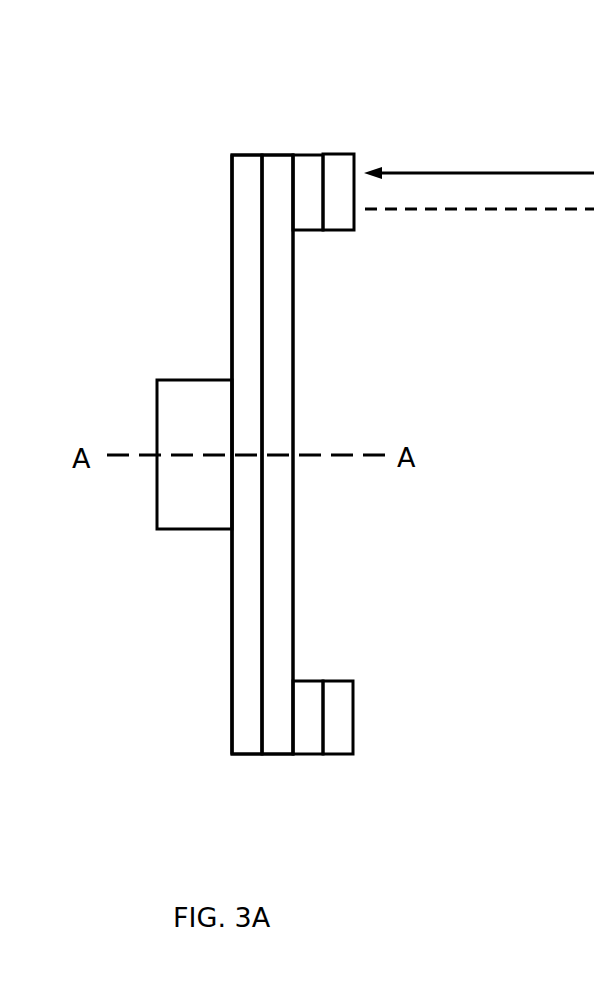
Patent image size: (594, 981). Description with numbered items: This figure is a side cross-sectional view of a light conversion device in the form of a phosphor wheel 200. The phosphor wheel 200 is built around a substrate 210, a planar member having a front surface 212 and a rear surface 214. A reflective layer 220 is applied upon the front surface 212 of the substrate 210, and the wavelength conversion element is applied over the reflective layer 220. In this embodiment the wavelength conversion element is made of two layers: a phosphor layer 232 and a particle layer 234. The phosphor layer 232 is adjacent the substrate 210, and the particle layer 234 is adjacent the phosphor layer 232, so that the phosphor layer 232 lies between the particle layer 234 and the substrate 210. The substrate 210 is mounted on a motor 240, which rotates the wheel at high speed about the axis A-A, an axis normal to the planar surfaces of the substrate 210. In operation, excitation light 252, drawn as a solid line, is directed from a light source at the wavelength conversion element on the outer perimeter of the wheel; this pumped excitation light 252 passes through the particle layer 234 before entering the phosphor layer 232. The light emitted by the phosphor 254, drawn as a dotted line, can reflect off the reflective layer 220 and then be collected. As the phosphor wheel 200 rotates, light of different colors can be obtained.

The phosphor wheel 200 is at (75, 62).
The substrate 210 is at (242, 153).
The front surface 212 is at (260, 735).
The rear surface 214 is at (232, 285).
The reflective layer 220 is at (270, 153).
The phosphor layer 232 is at (310, 152).
The particle layer 234 is at (340, 152).
The motor 240 is at (222, 509).
The excitation light 252 is at (479, 158).
The light emitted by the phosphor 254 is at (479, 237).